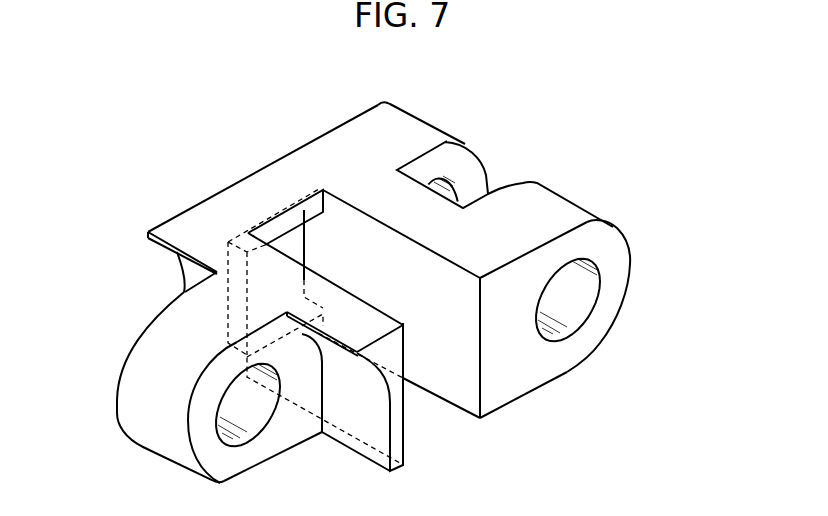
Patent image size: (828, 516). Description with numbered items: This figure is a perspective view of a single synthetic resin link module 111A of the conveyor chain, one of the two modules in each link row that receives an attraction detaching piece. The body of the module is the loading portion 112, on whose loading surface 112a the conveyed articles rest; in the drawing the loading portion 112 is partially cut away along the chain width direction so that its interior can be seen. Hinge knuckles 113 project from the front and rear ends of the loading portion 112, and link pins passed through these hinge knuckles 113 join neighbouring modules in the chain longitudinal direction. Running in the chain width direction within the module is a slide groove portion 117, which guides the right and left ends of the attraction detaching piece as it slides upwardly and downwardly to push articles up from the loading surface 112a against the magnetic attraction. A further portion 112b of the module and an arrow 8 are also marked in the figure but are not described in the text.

The synthetic resin link module 111A is at (124, 97).
The loading portion 112 is at (253, 182).
The loading surface 112a is at (303, 162).
The lower plate portion 112b is at (518, 404).
The hinge knuckles 113 is at (415, 118).
The slide groove portions 117 is at (287, 242).
The optical axis direction 8 is at (678, 172).